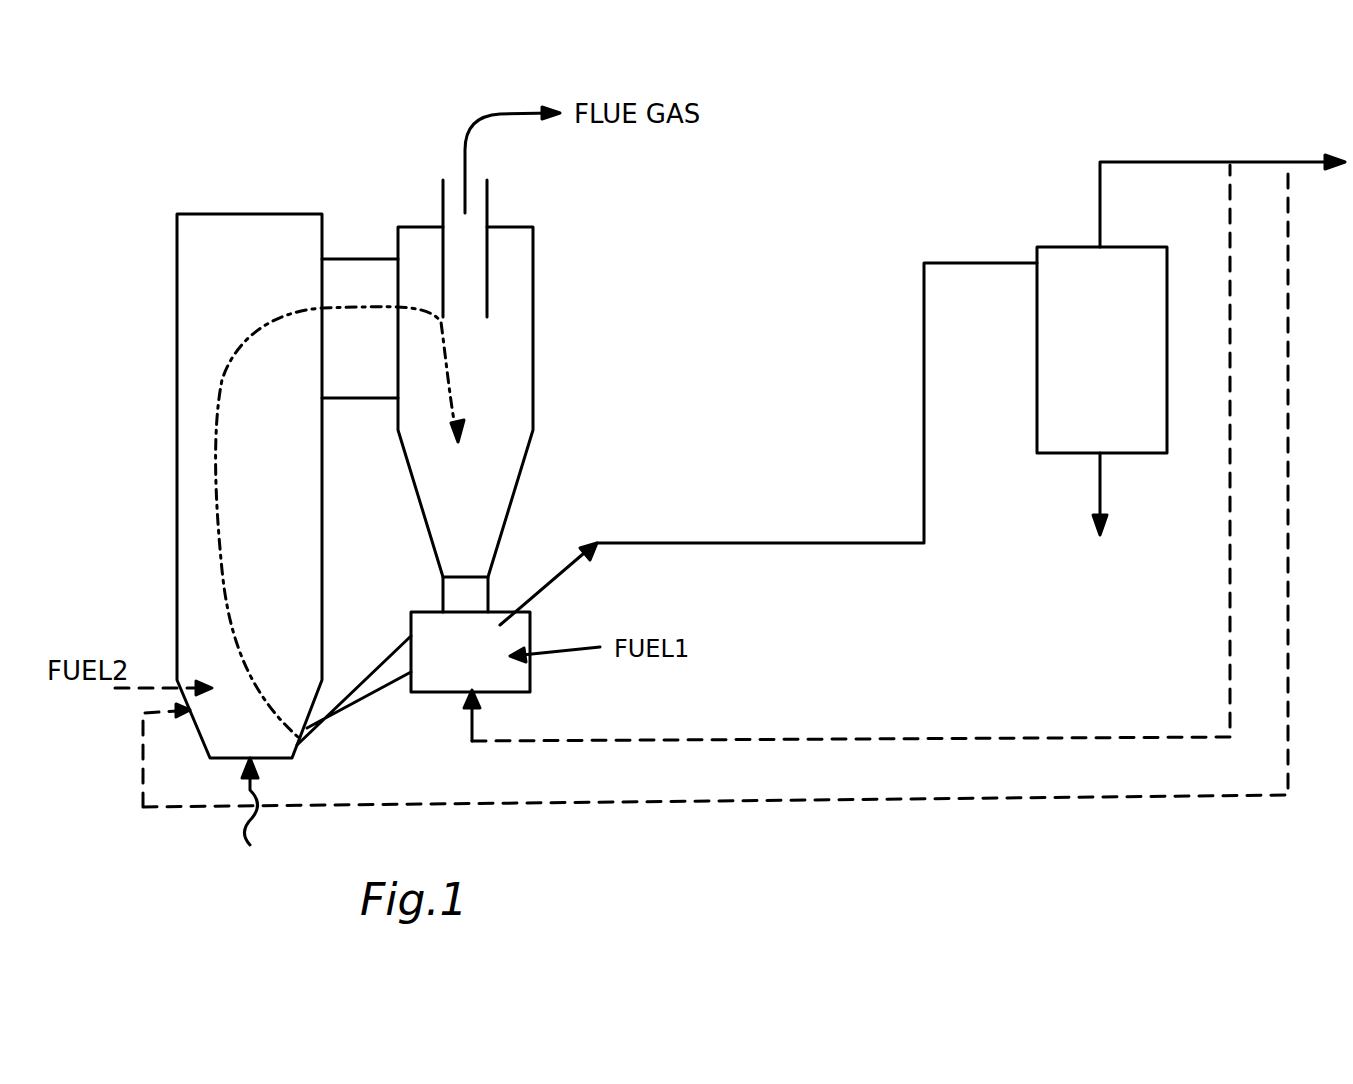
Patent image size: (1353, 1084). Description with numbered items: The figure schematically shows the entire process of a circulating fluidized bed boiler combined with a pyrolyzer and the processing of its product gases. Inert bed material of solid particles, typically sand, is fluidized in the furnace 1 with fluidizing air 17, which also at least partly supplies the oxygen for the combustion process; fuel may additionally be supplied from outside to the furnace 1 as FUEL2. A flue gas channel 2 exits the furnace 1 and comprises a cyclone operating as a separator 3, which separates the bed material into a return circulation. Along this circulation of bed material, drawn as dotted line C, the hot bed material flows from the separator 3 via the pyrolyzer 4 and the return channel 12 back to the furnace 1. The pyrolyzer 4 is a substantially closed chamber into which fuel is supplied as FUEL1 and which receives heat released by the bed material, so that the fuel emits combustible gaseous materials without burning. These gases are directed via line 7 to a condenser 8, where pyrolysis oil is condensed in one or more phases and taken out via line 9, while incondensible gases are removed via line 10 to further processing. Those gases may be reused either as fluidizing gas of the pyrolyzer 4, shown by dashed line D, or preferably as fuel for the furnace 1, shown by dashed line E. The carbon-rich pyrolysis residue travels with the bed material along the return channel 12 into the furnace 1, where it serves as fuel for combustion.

The furnace 1 is at (186, 493).
The flue gas channel 2 is at (357, 276).
The separator 3 is at (536, 331).
The pyrolyzer 4 is at (430, 625).
The line 7 is at (758, 545).
The condenser 8 is at (1114, 372).
The line 9 is at (1098, 493).
The line 10 is at (1173, 162).
The return channel 12 is at (363, 688).
The fluidizing air 17 is at (244, 836).
The circulation of bed material C is at (440, 355).
The dashed line D is at (1145, 737).
The dashed line E is at (1292, 605).